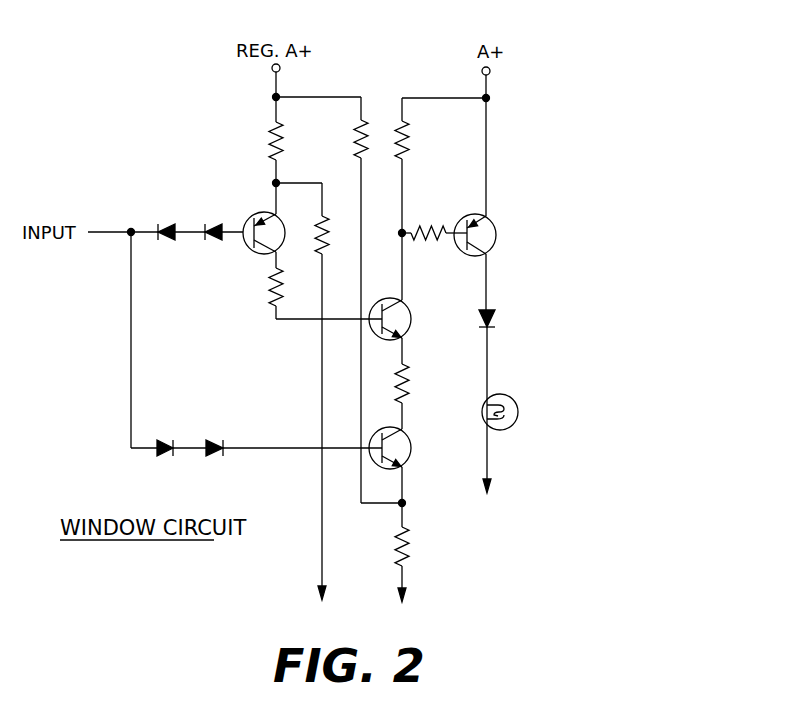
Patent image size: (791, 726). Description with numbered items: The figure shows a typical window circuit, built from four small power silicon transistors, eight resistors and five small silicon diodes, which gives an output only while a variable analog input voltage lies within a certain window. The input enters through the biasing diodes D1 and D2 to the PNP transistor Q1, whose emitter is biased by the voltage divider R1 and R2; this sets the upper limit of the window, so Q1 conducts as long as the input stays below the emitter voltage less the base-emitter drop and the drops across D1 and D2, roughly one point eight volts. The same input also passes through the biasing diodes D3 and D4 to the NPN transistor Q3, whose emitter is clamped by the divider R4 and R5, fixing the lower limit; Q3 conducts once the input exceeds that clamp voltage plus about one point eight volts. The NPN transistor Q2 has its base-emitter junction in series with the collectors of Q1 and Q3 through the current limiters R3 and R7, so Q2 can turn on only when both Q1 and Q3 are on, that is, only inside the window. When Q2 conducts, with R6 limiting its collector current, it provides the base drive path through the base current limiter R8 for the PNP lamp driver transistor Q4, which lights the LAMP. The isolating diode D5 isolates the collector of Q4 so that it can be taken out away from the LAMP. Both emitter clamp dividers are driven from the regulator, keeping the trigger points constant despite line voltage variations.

The voltage divider resistor R1 is at (289, 141).
The voltage divider resistor R2 is at (335, 235).
The current limiter R3 is at (289, 287).
The voltage divider resistor R4 is at (348, 139).
The voltage divider resistor R5 is at (415, 546).
The collector current limiter R6 is at (415, 140).
The current limiter R7 is at (415, 383).
The base current limiter R8 is at (428, 220).
The biasing diode D1 is at (210, 220).
The biasing diode D2 is at (164, 220).
The biasing diode D3 is at (163, 435).
The biasing diode D4 is at (213, 435).
The isolating diode D5 is at (500, 318).
The PNP transistor Q1 is at (262, 212).
The NPN transistor Q2 is at (404, 313).
The NPN transistor Q3 is at (406, 440).
The PNP lamp driver transistor Q4 is at (496, 236).
The lamp LAMP is at (526, 412).